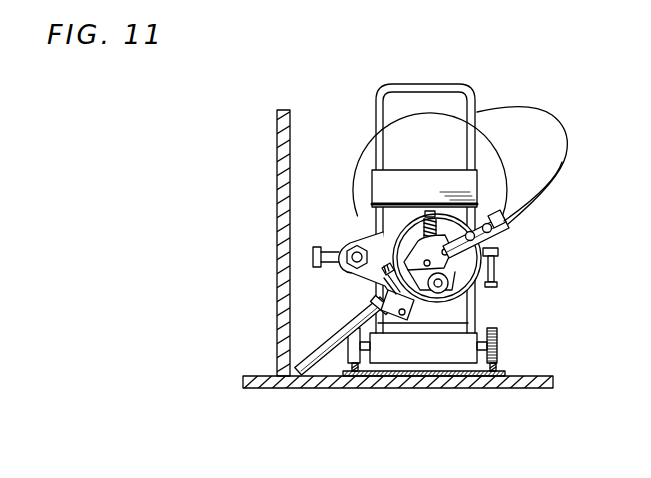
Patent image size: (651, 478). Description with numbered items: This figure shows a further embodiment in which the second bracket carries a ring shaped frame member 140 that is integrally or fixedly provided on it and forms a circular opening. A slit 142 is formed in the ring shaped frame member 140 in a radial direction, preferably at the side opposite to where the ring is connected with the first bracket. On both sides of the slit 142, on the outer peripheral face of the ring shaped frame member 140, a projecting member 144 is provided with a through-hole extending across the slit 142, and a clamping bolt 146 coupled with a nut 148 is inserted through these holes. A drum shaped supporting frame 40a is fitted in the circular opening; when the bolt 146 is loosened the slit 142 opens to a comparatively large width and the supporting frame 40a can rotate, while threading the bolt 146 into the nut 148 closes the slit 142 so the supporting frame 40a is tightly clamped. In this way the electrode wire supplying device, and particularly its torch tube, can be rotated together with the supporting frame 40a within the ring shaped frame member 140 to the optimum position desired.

The drum shaped supporting frame 40a is at (496, 190).
The ring shaped frame member 140 is at (486, 302).
The slit 142 is at (502, 262).
The projecting member 144 is at (498, 242).
The clamping bolt 146 is at (504, 284).
The nut 148 is at (516, 226).